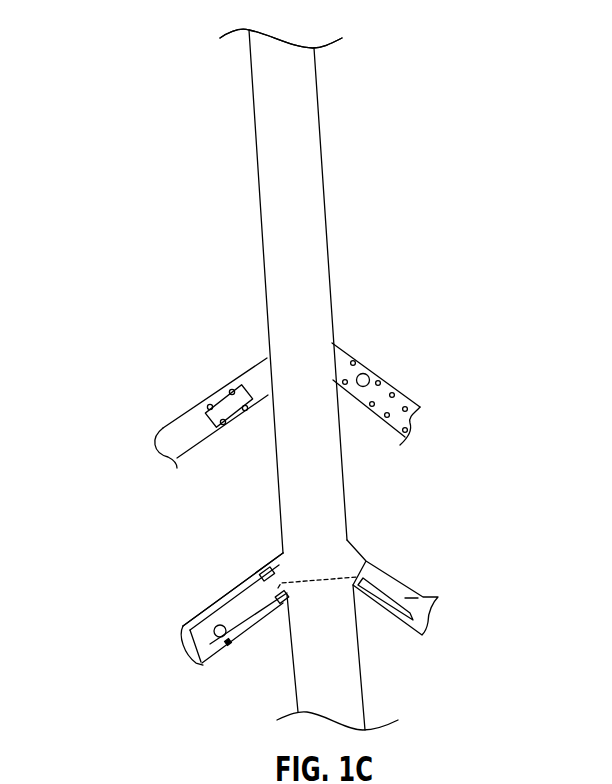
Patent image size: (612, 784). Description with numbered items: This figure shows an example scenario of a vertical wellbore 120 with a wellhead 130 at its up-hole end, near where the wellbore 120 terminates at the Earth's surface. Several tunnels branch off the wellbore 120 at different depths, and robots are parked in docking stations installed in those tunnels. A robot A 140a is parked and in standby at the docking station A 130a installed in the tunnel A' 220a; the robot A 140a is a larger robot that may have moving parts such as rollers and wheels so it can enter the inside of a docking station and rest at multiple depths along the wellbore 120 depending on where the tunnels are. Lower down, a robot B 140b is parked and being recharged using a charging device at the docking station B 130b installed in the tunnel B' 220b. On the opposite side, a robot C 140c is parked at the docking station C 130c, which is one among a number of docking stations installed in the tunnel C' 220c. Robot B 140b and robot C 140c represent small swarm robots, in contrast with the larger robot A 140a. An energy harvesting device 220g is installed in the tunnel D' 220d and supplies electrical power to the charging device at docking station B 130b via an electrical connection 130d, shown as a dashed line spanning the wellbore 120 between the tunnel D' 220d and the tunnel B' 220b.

The wellbore 120 is at (325, 217).
The wellhead 130 is at (273, 24).
The docking station A 130a is at (213, 395).
The docking station B 130b is at (238, 643).
The docking station C 130c is at (368, 372).
The electrical connection 130d is at (327, 578).
The robot A 140a is at (236, 403).
The robot B 140b is at (204, 618).
The robot C 140c is at (365, 388).
The tunnel A' 220a is at (157, 430).
The tunnel B' 220b is at (170, 636).
The tunnel C' 220c is at (415, 424).
The tunnel D' 220d is at (388, 567).
The energy harvesting device 220g is at (438, 597).